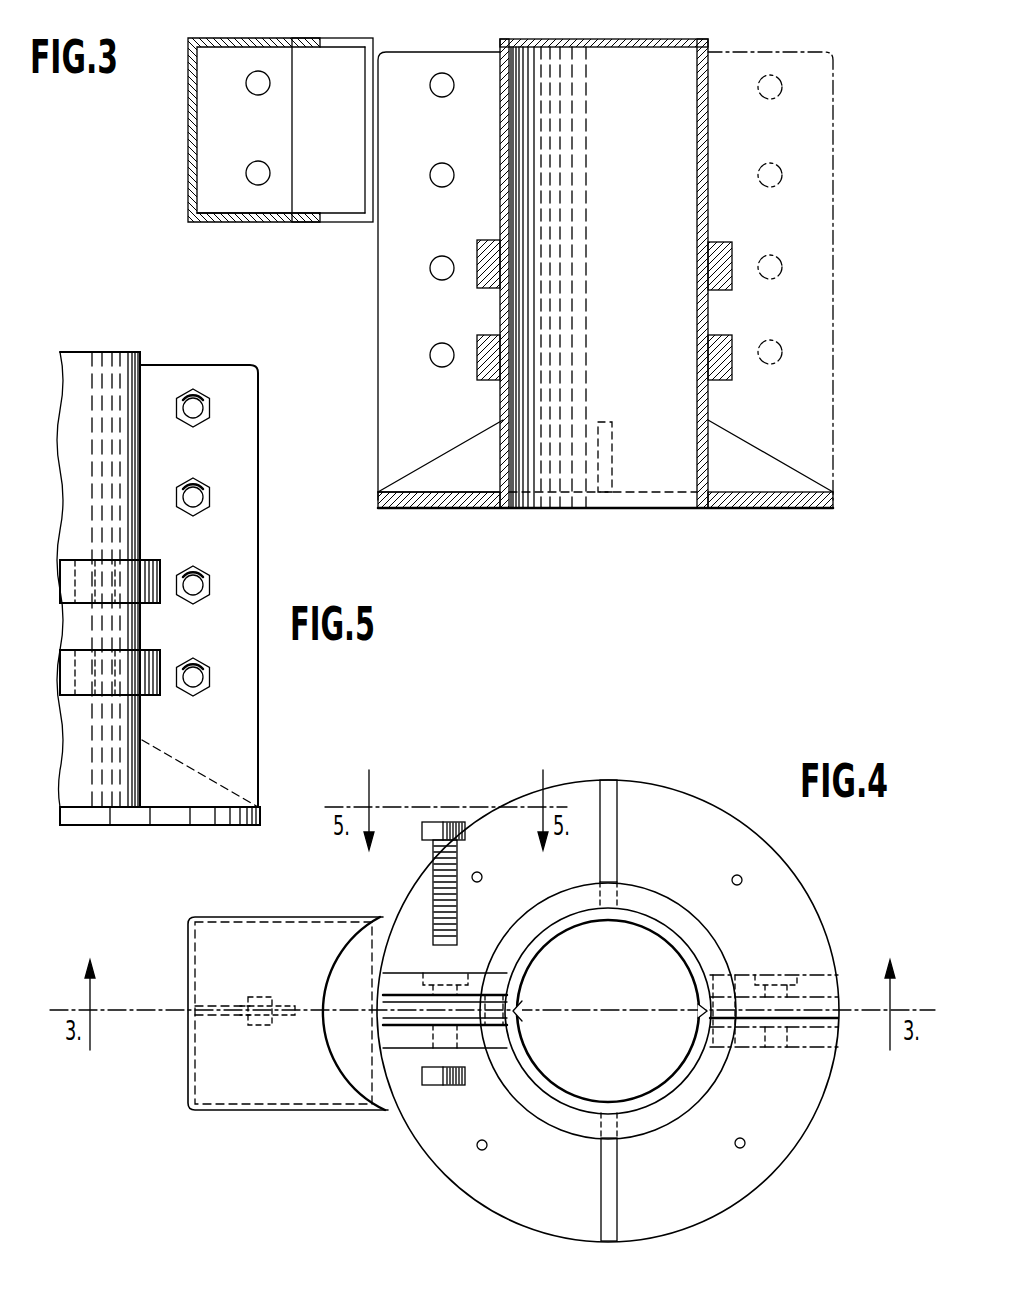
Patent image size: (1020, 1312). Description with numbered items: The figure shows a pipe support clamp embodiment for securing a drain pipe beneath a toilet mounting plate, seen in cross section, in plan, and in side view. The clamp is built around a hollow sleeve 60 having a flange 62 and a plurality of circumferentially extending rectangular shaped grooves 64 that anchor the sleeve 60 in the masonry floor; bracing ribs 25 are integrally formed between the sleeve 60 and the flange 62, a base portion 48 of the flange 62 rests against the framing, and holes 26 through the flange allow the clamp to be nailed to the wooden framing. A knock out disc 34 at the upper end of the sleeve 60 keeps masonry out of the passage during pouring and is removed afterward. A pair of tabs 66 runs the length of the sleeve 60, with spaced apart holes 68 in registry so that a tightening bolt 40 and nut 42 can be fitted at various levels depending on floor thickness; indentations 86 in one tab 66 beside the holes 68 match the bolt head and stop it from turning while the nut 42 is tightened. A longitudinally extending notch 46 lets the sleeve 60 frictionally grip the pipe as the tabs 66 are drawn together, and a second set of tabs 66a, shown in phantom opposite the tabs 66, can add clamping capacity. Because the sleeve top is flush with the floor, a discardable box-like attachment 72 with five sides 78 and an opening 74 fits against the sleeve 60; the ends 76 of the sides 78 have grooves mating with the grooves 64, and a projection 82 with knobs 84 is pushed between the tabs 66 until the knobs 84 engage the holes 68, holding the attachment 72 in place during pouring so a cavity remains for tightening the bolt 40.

In FIG. 3, the bracing ribs 25 is at (437, 467).
In FIG. 4, the bracing ribs 25 is at (612, 840).
In FIG. 4, the holes 26 is at (483, 877).
In FIG. 3, the knock out disc 34 is at (640, 48).
In FIG. 4, the tightening bolt 40 is at (436, 858).
In FIG. 4, the nut 42 is at (436, 1086).
In FIG. 3, the longitudinally extending notch 46 is at (585, 257).
In FIG. 5, the longitudinally extending notch 46 is at (98, 579).
In FIG. 4, the longitudinally extending notch 46 is at (517, 1010).
In FIG. 3, the base flange 48 is at (455, 509).
In FIG. 3, the hollow sleeve 60 is at (500, 305).
In FIG. 5, the hollow sleeve 60 is at (110, 627).
In FIG. 4, the hollow sleeve 60 is at (556, 930).
In FIG. 3, the flange 62 is at (383, 500).
In FIG. 5, the flange 62 is at (180, 808).
In FIG. 4, the flange 62 is at (788, 1117).
In FIG. 3, the rectangular shaped grooves 64 is at (708, 305).
In FIG. 3, the tabs 66 is at (395, 308).
In FIG. 5, the tabs 66 is at (228, 748).
In FIG. 4, the tabs 66 is at (408, 985).
In FIG. 3, the second set of tabs 66a is at (812, 114).
In FIG. 4, the second set of tabs 66a is at (748, 978).
In FIG. 3, the holes 68 is at (440, 90).
In FIG. 5, the holes 68 is at (205, 500).
In FIG. 4, the holes 68 is at (455, 1048).
In FIG. 3, the box-like attachment 72 is at (190, 130).
In FIG. 4, the box-like attachment 72 is at (190, 985).
In FIG. 4, the opening 74 is at (328, 1030).
In FIG. 4, the ends 76 is at (370, 917).
In FIG. 3, the sides 78 is at (230, 213).
In FIG. 4, the sides 78 is at (237, 917).
In FIG. 3, the projection 82 is at (292, 128).
In FIG. 4, the projection 82 is at (295, 1006).
In FIG. 3, the knobs 84 is at (258, 87).
In FIG. 4, the knobs 84 is at (256, 997).
In FIG. 5, the indentations 86 is at (205, 412).